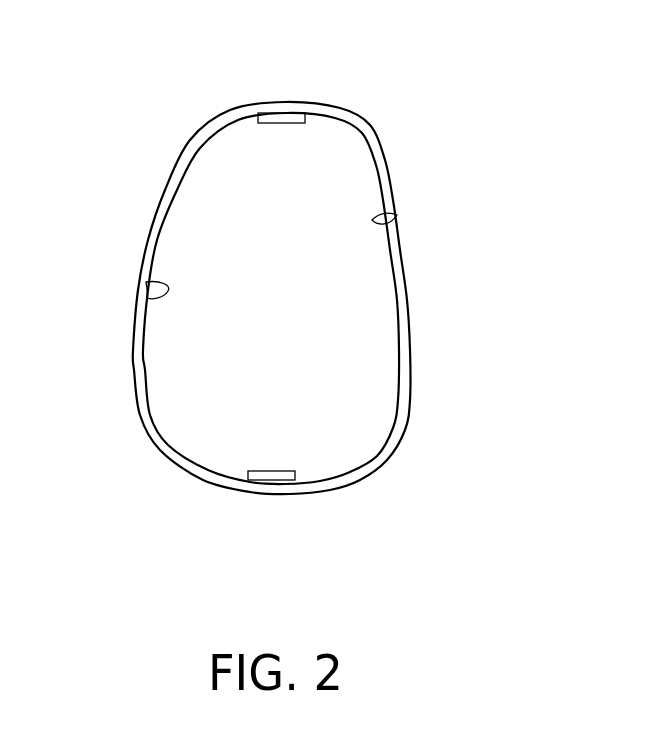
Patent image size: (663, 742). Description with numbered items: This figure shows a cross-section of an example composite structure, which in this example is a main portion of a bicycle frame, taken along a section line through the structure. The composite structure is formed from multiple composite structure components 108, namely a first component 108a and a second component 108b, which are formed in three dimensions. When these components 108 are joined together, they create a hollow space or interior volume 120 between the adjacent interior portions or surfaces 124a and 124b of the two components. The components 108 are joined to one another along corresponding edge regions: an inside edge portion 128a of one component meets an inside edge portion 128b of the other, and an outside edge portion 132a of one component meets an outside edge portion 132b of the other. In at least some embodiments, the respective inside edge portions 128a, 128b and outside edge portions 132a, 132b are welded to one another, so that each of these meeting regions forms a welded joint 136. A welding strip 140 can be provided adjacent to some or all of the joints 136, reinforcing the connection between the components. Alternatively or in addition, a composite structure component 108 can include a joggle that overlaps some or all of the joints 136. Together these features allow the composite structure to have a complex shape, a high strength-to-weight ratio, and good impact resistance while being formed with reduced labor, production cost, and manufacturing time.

The composite structure component 108 is at (409, 293).
The first composite structure component 108a is at (147, 240).
The second composite structure component 108b is at (391, 178).
The interior volume 120 is at (228, 155).
The first interior surface 124a is at (148, 282).
The second interior surface 124b is at (397, 213).
The first inside edge portion 128a is at (306, 131).
The second inside edge portion 128b is at (313, 102).
The first outside edge portion 132a is at (246, 491).
The second outside edge portion 132b is at (332, 486).
The welded joint 136 is at (306, 131).
The welding strip 140 is at (258, 118).